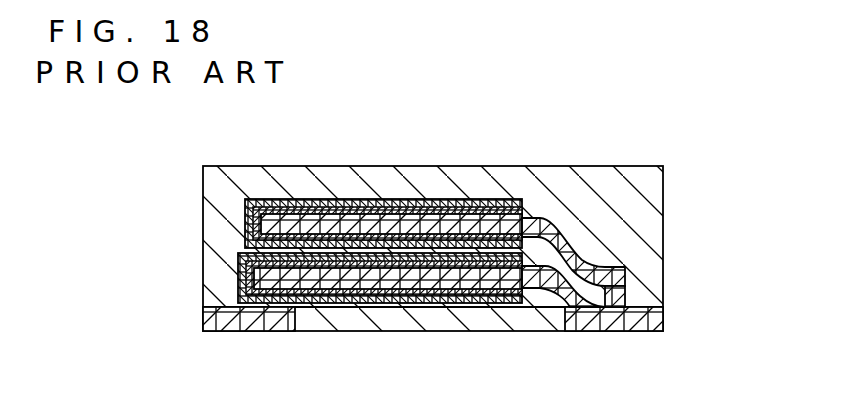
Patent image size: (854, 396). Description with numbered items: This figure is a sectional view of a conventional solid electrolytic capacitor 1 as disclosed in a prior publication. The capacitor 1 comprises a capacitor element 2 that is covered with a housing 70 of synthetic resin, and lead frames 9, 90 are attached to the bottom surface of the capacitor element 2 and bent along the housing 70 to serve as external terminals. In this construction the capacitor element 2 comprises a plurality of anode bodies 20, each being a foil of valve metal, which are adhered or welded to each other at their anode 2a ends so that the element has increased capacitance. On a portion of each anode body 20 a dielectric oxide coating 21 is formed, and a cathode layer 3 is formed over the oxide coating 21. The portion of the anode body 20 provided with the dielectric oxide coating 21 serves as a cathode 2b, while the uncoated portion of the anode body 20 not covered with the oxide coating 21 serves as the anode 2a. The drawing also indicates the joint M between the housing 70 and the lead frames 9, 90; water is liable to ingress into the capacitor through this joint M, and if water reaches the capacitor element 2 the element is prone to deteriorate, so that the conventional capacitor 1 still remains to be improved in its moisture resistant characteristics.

The solid electrolytic capacitor 1 is at (660, 135).
The capacitor element 2 is at (557, 156).
The anode 2a is at (612, 267).
The cathode 2b is at (513, 199).
The cathode layer 3 is at (340, 199).
The lead frame 9 is at (628, 320).
The anode body 20 is at (542, 232).
The dielectric oxide coating 21 is at (425, 199).
The housing 70 is at (653, 185).
The lead frame 90 is at (262, 327).
The joint M is at (195, 311).